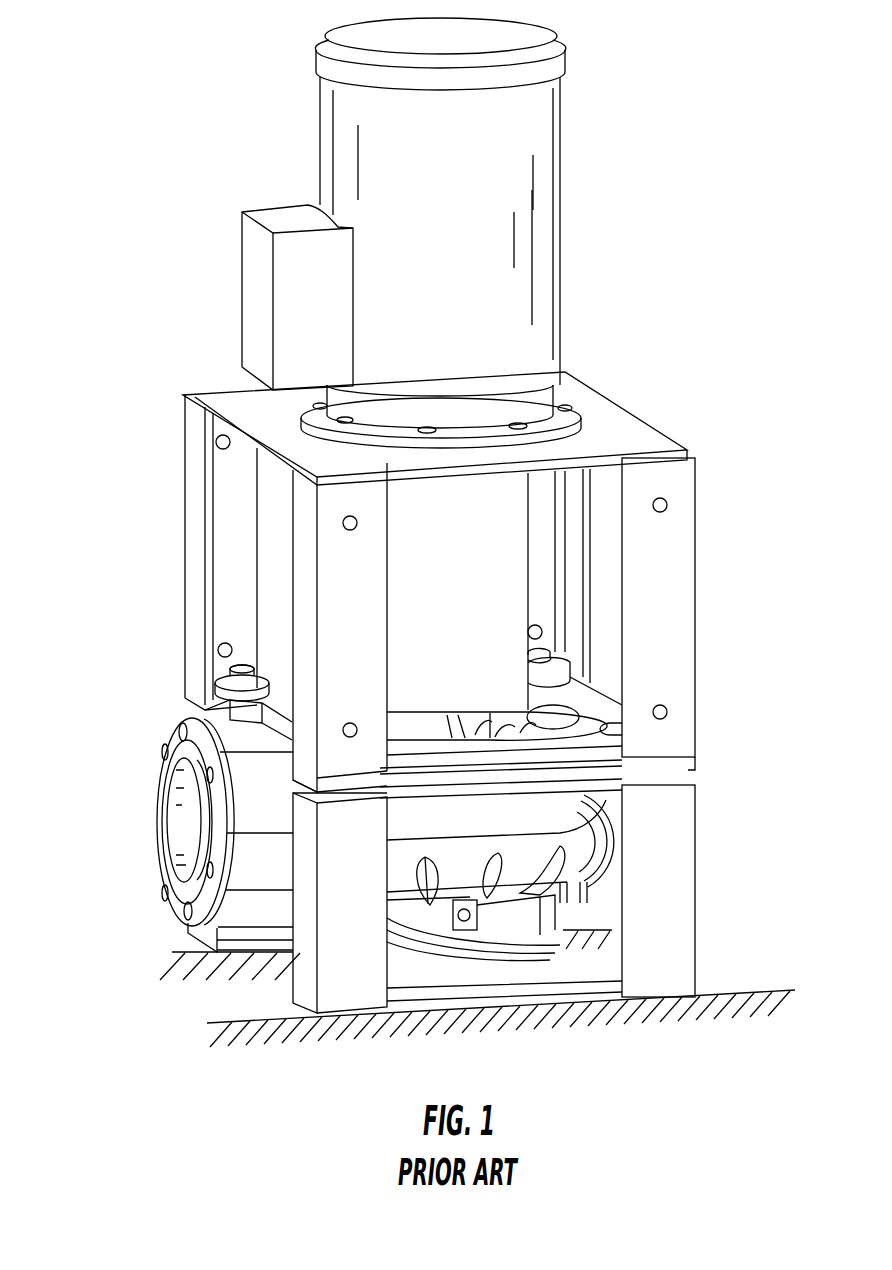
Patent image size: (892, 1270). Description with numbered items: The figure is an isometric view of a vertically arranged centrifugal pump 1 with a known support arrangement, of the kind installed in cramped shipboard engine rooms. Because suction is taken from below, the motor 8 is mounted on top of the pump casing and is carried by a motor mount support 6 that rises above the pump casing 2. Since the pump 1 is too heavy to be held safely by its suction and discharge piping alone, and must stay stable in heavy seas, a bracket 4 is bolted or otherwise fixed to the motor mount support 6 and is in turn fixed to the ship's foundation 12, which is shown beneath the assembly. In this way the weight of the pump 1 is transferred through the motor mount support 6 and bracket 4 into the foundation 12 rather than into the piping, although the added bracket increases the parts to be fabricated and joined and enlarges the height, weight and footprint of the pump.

The pump 1 is at (431, 541).
The pump 2 is at (595, 790).
The bracket 4 is at (683, 884).
The motor mount support 6 is at (680, 576).
The motor 8 is at (540, 247).
The ship's foundation 12 is at (665, 1020).